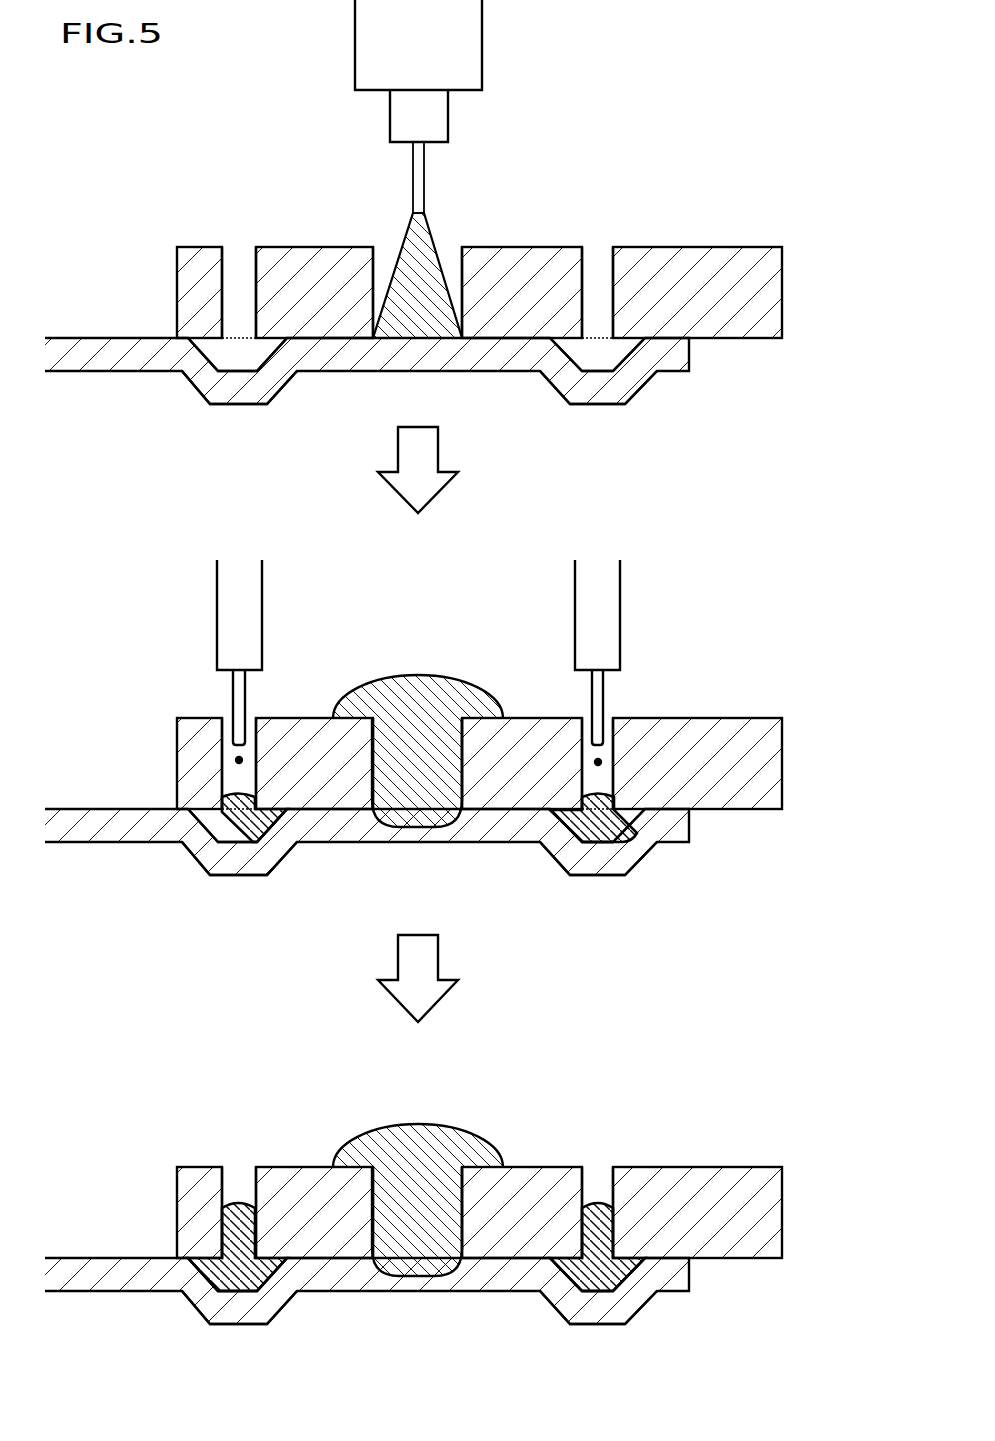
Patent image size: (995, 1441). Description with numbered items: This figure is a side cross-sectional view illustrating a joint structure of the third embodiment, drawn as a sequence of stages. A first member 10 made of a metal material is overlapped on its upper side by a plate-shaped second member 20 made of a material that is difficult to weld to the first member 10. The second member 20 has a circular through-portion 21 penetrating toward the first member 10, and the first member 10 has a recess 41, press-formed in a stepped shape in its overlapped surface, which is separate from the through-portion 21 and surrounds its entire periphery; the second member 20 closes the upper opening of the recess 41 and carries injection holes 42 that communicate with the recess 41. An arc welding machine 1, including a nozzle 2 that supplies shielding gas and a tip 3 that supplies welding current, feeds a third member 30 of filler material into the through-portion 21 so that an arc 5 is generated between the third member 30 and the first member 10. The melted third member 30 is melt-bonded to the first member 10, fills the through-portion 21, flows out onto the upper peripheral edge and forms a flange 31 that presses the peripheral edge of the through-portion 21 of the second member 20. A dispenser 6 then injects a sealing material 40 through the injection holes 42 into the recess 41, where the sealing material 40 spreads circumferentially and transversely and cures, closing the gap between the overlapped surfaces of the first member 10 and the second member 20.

The arc welding machine 1 is at (458, 71).
The nozzle 2 is at (483, 72).
The tip 3 is at (448, 116).
The arc 5 is at (430, 227).
The dispenser 6 is at (217, 595).
The first member 10 is at (92, 338).
The second member 20 is at (708, 247).
The through-portion 21 is at (382, 267).
The third member 30 is at (424, 177).
The flange 31 is at (490, 683).
The sealing material 40 is at (252, 843).
The recess 41 is at (232, 368).
The injection hole 42 is at (247, 260).